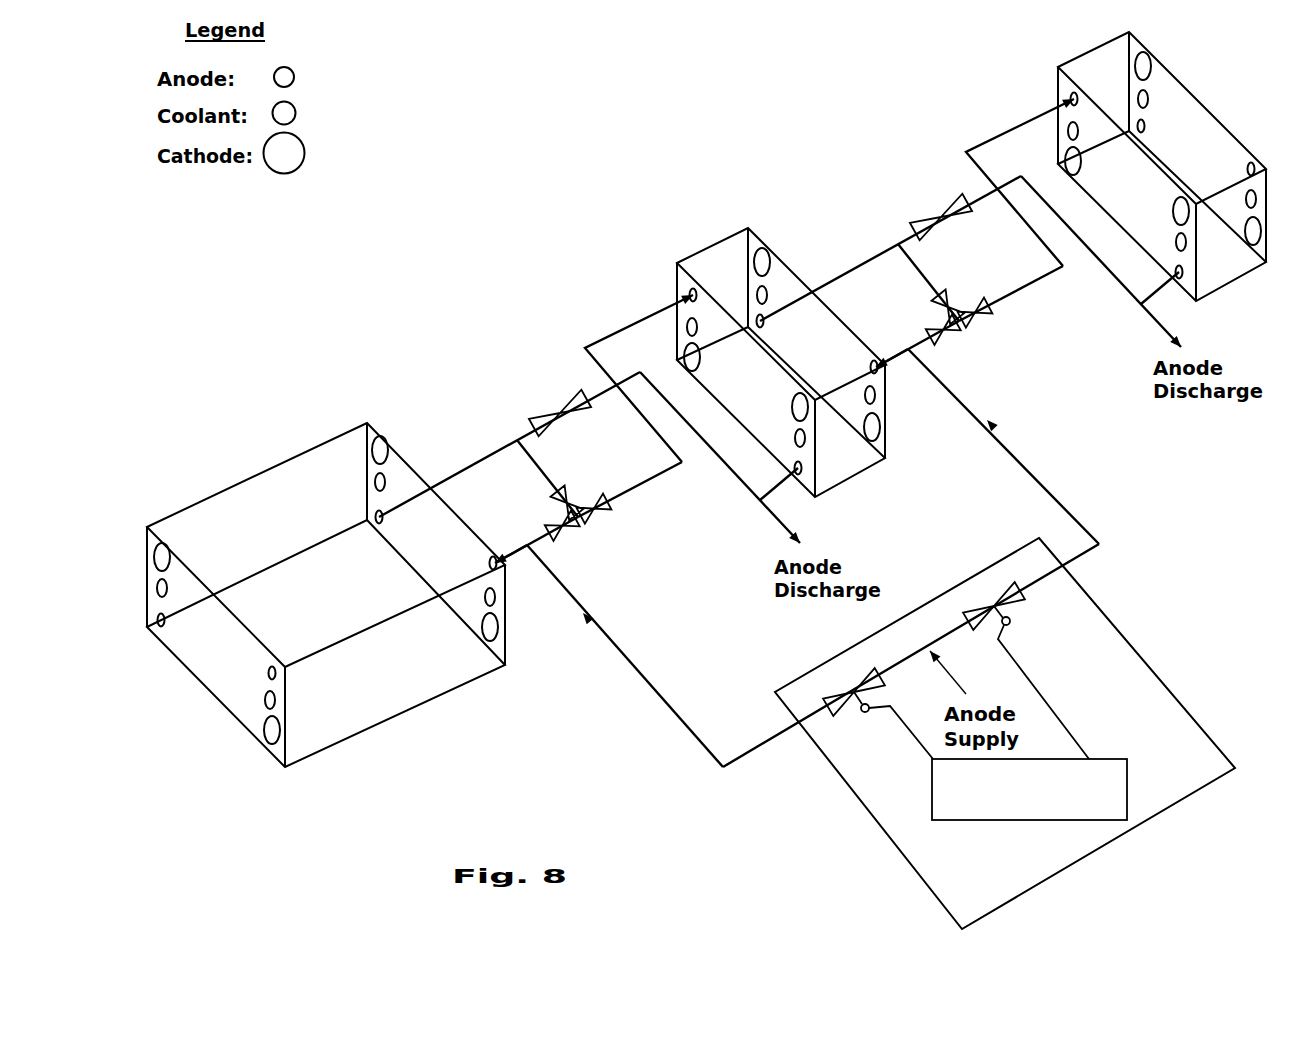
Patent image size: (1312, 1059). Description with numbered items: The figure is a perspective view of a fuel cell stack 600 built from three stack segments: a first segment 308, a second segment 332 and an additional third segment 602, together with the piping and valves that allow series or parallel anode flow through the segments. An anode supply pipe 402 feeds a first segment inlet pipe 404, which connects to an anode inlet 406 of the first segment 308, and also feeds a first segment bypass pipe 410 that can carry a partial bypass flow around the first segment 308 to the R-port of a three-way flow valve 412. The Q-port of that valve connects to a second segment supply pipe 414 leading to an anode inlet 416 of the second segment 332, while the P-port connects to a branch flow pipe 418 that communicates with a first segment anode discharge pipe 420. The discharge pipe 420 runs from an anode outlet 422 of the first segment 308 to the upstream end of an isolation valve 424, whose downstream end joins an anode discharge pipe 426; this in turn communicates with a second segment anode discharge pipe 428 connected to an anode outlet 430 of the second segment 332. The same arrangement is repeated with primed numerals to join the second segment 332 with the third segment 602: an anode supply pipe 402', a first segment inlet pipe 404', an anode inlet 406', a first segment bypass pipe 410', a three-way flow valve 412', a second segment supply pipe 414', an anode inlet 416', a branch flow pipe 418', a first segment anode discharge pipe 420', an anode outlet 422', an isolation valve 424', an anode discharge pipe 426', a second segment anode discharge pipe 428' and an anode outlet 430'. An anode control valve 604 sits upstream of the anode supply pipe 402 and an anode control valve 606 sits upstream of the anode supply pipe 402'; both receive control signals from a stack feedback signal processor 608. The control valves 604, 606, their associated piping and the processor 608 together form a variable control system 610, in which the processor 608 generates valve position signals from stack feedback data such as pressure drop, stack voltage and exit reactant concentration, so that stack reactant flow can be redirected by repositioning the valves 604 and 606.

The first segment 308 is at (207, 527).
The second segment 332 is at (703, 258).
The third segment 602 is at (1149, 157).
The fuel cell stack 600 is at (523, 162).
The anode supply pipe 402 is at (625, 656).
The first segment inlet pipe 404 is at (525, 582).
The anode inlet 406 is at (472, 526).
The first segment bypass pipe 410 is at (536, 523).
The three-way flow valve 412 is at (616, 525).
The second segment supply pipe 414 is at (634, 501).
The anode inlet 416 is at (641, 361).
The branch flow pipe 418 is at (560, 478).
The first segment anode discharge pipe 420 is at (509, 444).
The anode outlet 422 is at (335, 458).
The isolation valve 424 is at (546, 407).
The anode discharge pipe 426 is at (720, 457).
The second segment anode discharge pipe 428 is at (806, 506).
The anode outlet 430 is at (845, 491).
The anode supply pipe 402' is at (1003, 446).
The first segment inlet pipe 404' is at (910, 385).
The anode inlet 406' is at (854, 329).
The first segment bypass pipe 410' is at (917, 329).
The three-way flow valve 412' is at (999, 327).
The second segment supply pipe 414' is at (1018, 303).
The anode inlet 416' is at (1022, 163).
The branch flow pipe 418' is at (945, 277).
The first segment anode discharge pipe 420' is at (890, 248).
The anode outlet 422' is at (732, 240).
The isolation valve 424' is at (927, 211).
The anode discharge pipe 426' is at (1101, 261).
The second segment anode discharge pipe 428' is at (1190, 308).
The anode outlet 430' is at (1230, 293).
The anode control valve 604 is at (847, 700).
The anode control valve 606 is at (1012, 603).
The stack feedback signal processor 608 is at (1007, 820).
The variable control system 610 is at (1154, 699).